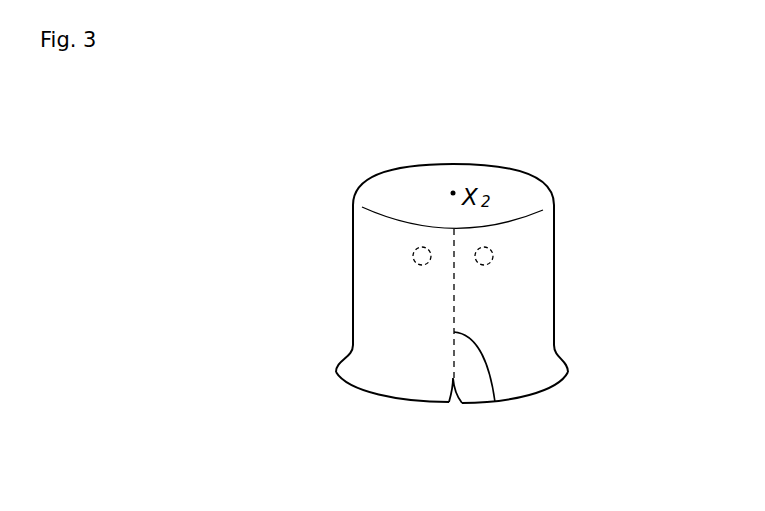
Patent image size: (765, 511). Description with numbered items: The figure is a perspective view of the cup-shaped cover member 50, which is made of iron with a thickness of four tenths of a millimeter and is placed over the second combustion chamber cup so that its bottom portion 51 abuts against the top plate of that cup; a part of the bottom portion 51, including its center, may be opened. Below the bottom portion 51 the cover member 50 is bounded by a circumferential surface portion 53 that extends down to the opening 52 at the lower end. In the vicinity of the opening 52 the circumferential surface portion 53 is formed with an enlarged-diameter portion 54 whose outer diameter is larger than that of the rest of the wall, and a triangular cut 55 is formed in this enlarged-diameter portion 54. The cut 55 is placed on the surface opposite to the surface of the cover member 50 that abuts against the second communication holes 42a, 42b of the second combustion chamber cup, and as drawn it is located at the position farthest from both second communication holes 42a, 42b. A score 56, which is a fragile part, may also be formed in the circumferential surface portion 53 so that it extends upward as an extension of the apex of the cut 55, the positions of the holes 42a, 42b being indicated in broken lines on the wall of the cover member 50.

The cover member 50 is at (537, 263).
The bottom portion 51 is at (407, 186).
The opening 52 is at (372, 393).
The circumferential surface portion 53 is at (367, 250).
The enlarged-diameter portion 54 is at (338, 364).
The triangular cut 55 is at (452, 402).
The score 56 is at (495, 402).
The second communication hole 42a is at (422, 265).
The second communication hole 42b is at (484, 265).